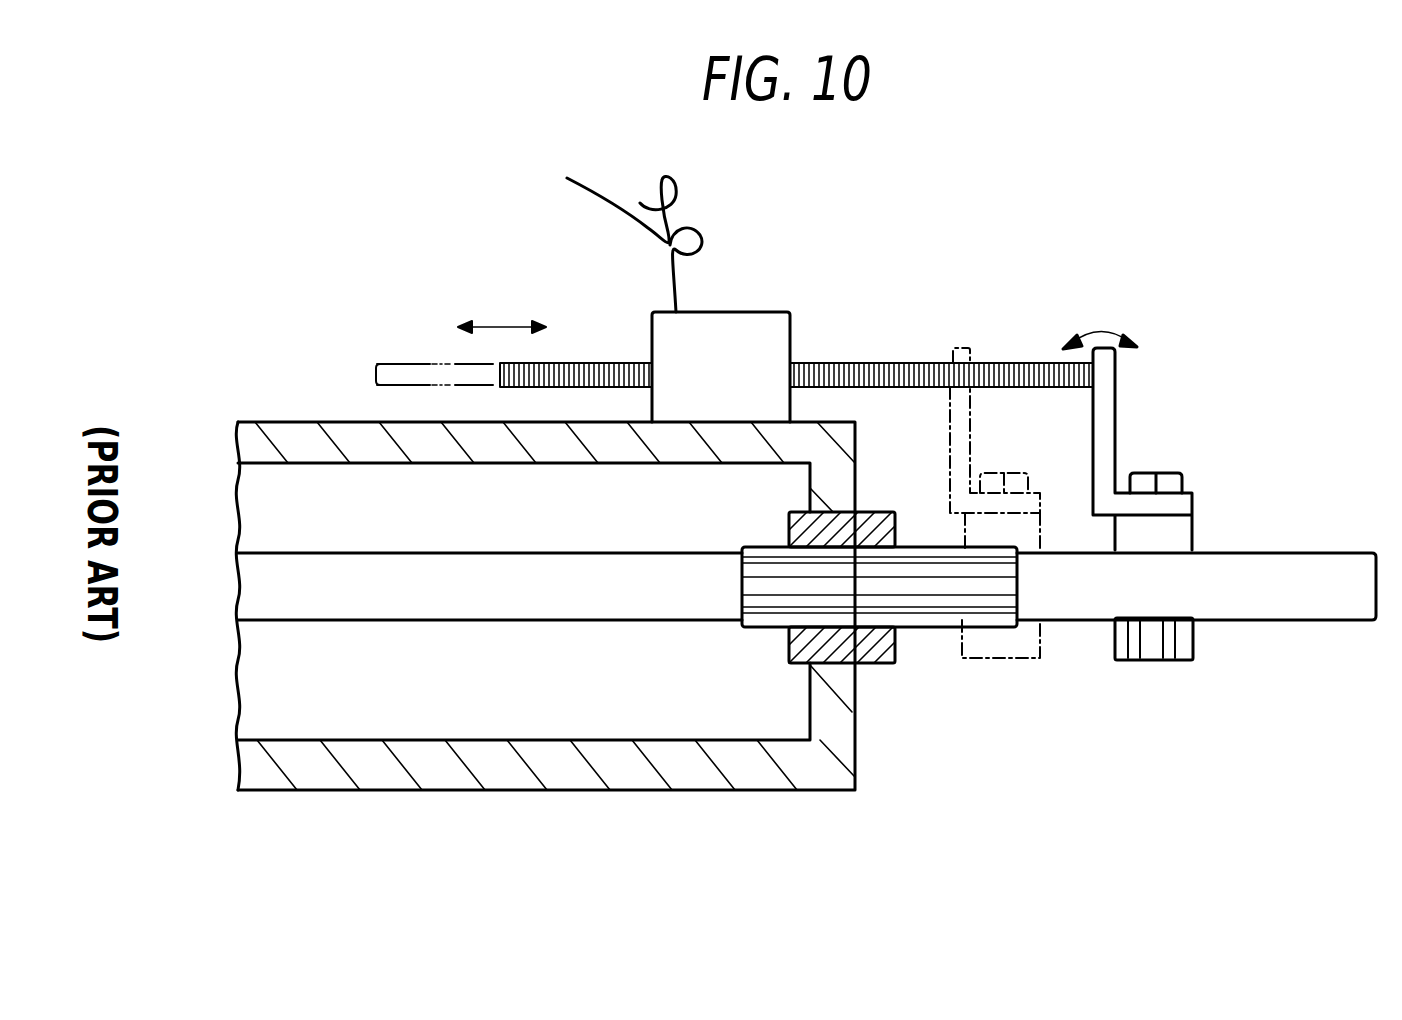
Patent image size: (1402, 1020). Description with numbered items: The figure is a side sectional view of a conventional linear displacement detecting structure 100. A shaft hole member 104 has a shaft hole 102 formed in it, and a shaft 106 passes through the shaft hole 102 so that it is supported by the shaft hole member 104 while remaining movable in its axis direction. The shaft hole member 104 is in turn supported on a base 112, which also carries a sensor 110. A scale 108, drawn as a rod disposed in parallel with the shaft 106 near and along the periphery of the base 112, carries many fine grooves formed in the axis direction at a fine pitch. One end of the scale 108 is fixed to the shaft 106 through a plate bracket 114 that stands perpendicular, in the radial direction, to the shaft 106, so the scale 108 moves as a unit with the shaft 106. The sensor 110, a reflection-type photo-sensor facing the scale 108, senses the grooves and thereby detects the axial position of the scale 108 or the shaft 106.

The linear displacement detecting structure 100 is at (417, 289).
The shaft hole 102 is at (775, 623).
The shaft hole member 104 is at (888, 644).
The shaft 106 is at (404, 560).
The scale 108 is at (840, 365).
The sensor 110 is at (772, 312).
The base 112 is at (447, 777).
The plate bracket 114 is at (1103, 405).